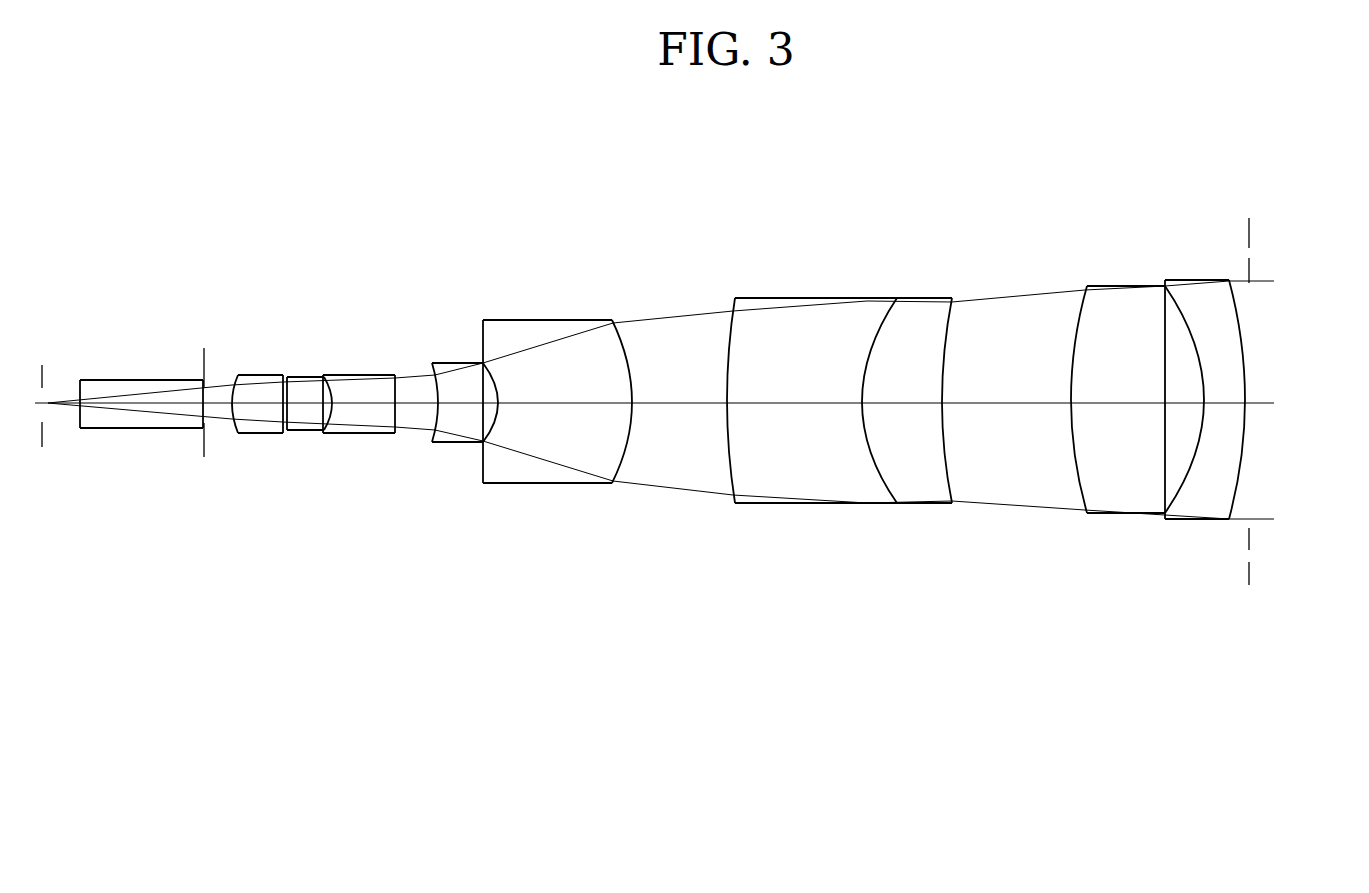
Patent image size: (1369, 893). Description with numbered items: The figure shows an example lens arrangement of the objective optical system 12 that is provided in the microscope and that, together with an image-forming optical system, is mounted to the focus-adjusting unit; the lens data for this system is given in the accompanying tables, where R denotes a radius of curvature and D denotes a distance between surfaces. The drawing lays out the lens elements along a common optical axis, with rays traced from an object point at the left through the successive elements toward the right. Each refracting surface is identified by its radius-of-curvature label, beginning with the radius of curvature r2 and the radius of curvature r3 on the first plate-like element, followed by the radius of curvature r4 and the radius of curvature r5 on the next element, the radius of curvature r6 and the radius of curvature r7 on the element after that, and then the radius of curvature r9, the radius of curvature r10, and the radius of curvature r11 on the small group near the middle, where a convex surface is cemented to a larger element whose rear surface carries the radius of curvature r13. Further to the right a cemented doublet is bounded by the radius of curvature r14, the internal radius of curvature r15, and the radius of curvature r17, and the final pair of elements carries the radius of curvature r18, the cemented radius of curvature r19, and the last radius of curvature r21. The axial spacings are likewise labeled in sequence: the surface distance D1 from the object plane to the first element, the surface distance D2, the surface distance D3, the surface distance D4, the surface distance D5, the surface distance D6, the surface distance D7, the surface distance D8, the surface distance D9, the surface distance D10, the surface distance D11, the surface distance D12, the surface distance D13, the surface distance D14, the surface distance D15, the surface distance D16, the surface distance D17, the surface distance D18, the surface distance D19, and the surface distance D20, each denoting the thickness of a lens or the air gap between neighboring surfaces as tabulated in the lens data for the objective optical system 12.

The objective optical system 12 is at (1307, 190).
The radius of curvature r2 is at (80, 392).
The radius of curvature r3 is at (205, 383).
The radius of curvature r4 is at (233, 386).
The radius of curvature r5 is at (285, 372).
The radius of curvature r6 is at (287, 407).
The radius of curvature r7 is at (330, 397).
The radius of curvature r9 is at (394, 372).
The radius of curvature r10 is at (434, 388).
The radius of curvature r11 is at (496, 385).
The radius of curvature r13 is at (630, 357).
The radius of curvature r14 is at (730, 335).
The radius of curvature r15 is at (870, 343).
The radius of curvature r17 is at (948, 328).
The radius of curvature r18 is at (1071, 306).
The radius of curvature r19 is at (1186, 316).
The radius of curvature r21 is at (1245, 330).
The surface distance D1 is at (65, 409).
The surface distance D2 is at (131, 405).
The surface distance D3 is at (215, 407).
The surface distance D4 is at (250, 407).
The surface distance D5 is at (304, 388).
The surface distance D6 is at (312, 405).
The surface distance D7 is at (338, 407).
The surface distance D8 is at (363, 400).
The surface distance D9 is at (412, 405).
The surface distance D10 is at (462, 407).
The surface distance D11 is at (507, 407).
The surface distance D12 is at (573, 405).
The surface distance D13 is at (678, 403).
The surface distance D14 is at (792, 403).
The surface distance D15 is at (860, 405).
The surface distance D16 is at (910, 403).
The surface distance D17 is at (1015, 404).
The surface distance D18 is at (1126, 404).
The surface distance D19 is at (1206, 398).
The surface distance D20 is at (1230, 402).